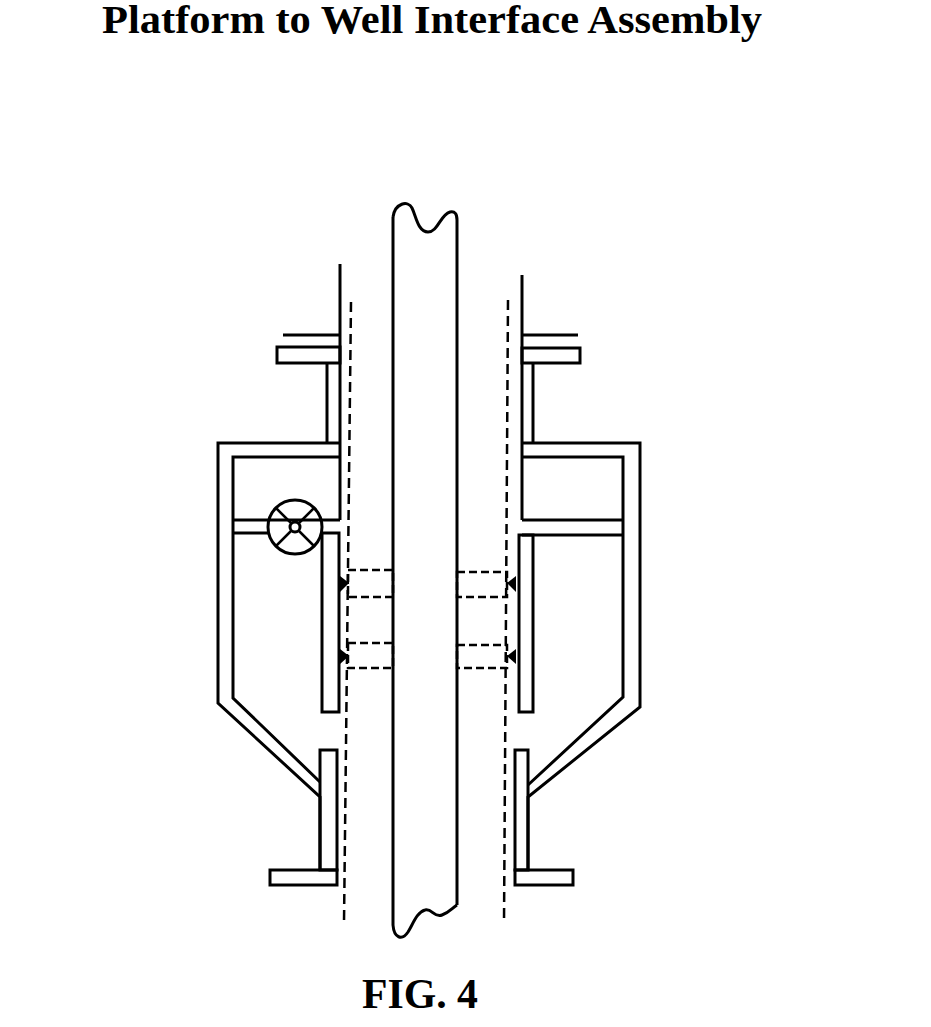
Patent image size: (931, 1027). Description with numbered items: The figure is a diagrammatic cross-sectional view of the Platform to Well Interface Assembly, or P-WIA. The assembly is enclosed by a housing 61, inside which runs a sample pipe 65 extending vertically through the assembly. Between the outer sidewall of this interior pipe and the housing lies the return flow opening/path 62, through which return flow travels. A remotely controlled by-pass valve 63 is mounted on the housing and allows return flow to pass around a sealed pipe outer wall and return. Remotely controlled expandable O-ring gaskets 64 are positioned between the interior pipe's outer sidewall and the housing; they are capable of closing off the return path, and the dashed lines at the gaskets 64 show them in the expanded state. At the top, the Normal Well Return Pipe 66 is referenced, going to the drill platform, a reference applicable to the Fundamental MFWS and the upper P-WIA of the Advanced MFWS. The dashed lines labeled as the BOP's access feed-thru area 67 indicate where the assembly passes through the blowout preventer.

The housing 61 is at (197, 605).
The return flow opening/path 62 is at (306, 741).
The remotely controlled by-pass valve 63 is at (256, 507).
The remotely controlled expandable 'o' ring gaskets 64 is at (378, 594).
The sample pipe 65 is at (480, 222).
The Normal Well Return Pipe 66 is at (536, 311).
The BOP's access feed-thru area 67 is at (464, 933).